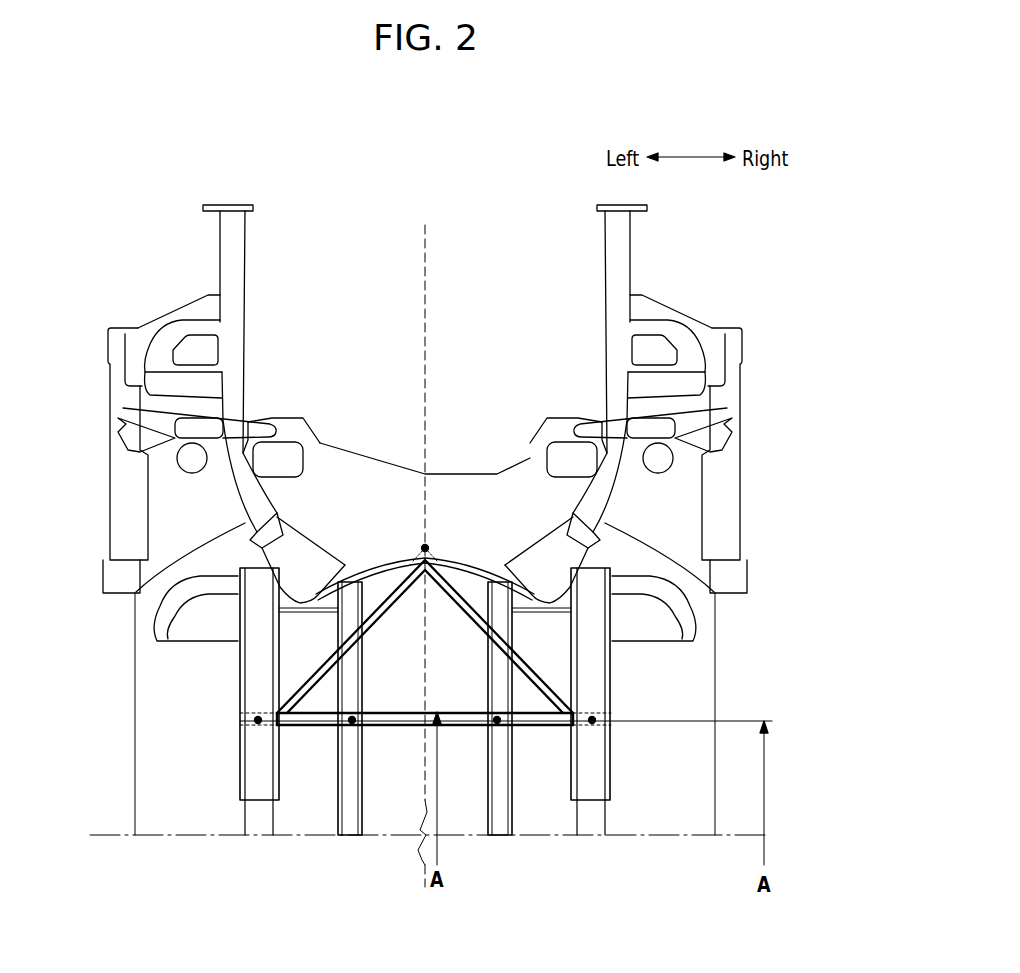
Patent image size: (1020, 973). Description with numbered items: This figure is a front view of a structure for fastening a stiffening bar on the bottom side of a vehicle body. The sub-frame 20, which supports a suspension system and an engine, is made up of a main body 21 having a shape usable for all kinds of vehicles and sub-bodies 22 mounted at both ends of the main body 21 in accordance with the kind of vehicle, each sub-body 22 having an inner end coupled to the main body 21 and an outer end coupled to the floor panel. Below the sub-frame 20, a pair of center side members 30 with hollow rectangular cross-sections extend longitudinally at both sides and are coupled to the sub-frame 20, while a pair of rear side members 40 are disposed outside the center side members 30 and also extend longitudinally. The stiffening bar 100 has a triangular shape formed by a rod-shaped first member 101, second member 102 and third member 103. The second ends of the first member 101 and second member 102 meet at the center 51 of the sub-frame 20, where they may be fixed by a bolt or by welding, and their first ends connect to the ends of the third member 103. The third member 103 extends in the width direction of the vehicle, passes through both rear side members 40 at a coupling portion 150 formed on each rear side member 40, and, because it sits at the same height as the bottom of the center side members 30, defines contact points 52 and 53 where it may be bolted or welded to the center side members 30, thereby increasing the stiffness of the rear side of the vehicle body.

The sub-frame 20 is at (350, 453).
The main body 21 is at (490, 470).
The sub-body 22 is at (267, 423).
The center side member 30 is at (352, 828).
The rear side member 40 is at (255, 790).
The center of the sub-frame 51 is at (428, 540).
The contact point 52 is at (356, 719).
The contact point 53 is at (493, 720).
The stiffening bar 100 is at (433, 608).
The first member 101 is at (380, 597).
The second member 102 is at (550, 688).
The third member 103 is at (425, 766).
The coupling portion 150 is at (612, 715).